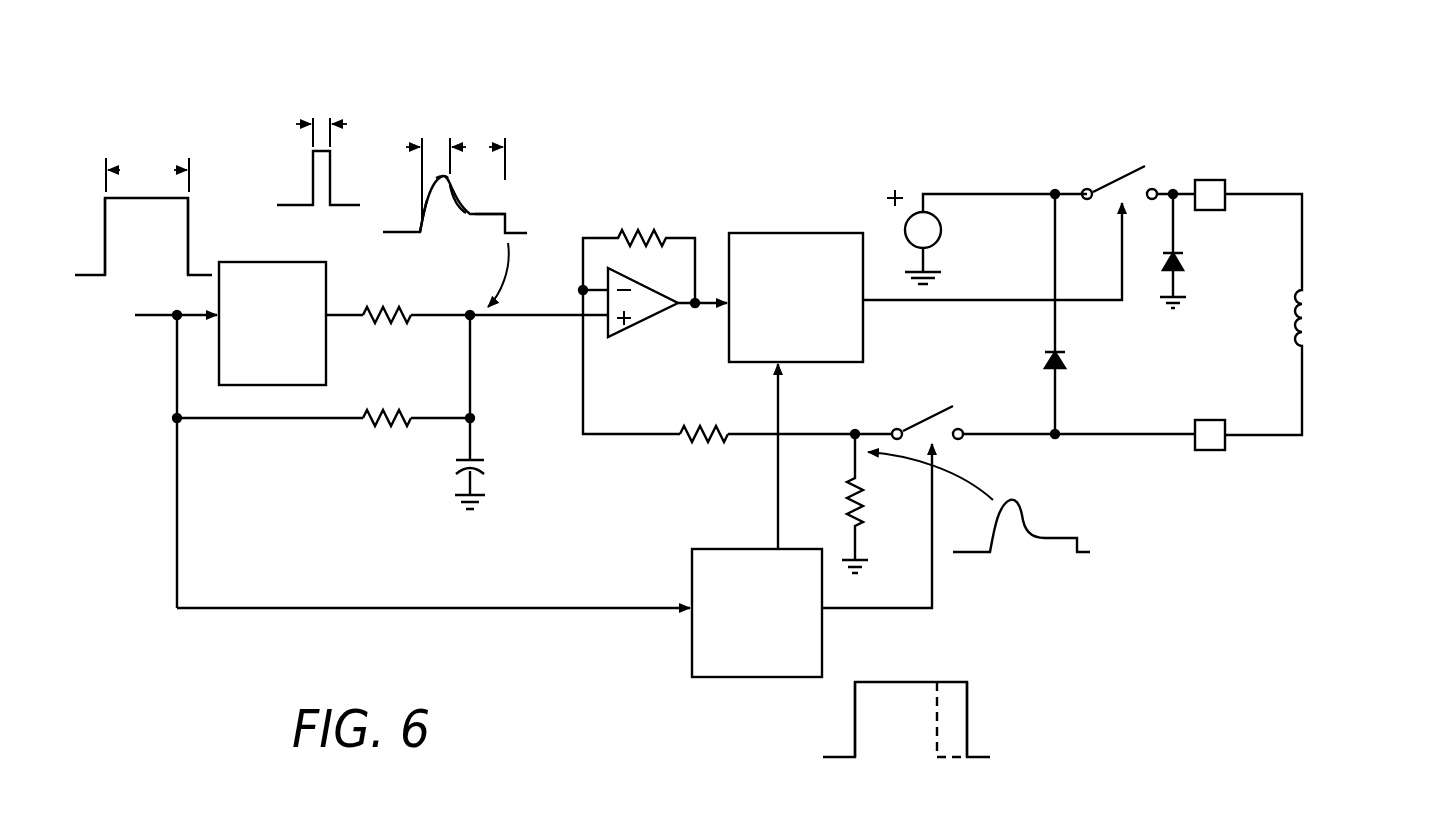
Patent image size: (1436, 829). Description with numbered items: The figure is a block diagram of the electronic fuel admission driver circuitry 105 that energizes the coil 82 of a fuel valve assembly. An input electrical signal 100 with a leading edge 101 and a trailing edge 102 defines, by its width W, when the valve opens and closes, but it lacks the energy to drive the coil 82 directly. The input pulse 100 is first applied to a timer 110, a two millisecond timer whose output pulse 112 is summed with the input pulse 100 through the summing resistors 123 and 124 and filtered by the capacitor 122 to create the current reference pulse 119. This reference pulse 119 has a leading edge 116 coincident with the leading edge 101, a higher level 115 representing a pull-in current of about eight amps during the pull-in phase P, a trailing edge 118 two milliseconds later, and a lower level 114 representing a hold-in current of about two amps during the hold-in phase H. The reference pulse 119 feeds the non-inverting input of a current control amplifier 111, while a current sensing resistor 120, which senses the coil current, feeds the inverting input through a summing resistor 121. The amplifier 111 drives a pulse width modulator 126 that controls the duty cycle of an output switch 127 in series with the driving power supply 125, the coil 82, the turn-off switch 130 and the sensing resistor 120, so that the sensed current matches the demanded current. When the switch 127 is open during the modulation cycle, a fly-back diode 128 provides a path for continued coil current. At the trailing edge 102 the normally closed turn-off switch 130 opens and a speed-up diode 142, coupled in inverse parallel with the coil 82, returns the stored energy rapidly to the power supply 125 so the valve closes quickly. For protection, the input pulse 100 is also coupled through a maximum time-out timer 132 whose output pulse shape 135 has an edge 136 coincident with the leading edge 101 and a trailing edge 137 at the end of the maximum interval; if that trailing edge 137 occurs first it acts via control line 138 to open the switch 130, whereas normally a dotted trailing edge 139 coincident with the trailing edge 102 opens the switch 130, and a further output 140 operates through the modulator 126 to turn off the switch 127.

The coil 82 is at (1311, 315).
The input electrical signal 100 is at (143, 230).
The leading edge 101 is at (102, 234).
The trailing edge 102 is at (194, 229).
The driver circuitry 105 is at (810, 125).
The timer 110 is at (272, 338).
The current control amplifier 111 is at (695, 256).
The 2 millisecond pulse 112 is at (355, 306).
The lower level 114 is at (503, 209).
The higher level 115 is at (441, 177).
The leading edge 116 is at (416, 221).
The trailing edge 118 is at (451, 186).
The current reference pulse 119 is at (455, 201).
The current sensing resistor 120 is at (867, 515).
The summing resistor 121 is at (704, 450).
The capacitor 122 is at (492, 412).
The summing resistor 123 is at (387, 330).
The summing resistor 124 is at (387, 434).
The driving power supply 125 is at (987, 245).
The pulse width modulator 126 is at (796, 313).
The output switch 127 is at (1125, 156).
The fly-back diode 128 is at (1225, 251).
The turn-off switch 130 is at (1025, 395).
The maximum time-out timer 132 is at (757, 628).
The output pulse shape 135 is at (906, 740).
The edge 136 is at (852, 714).
The trailing edge 137 is at (971, 718).
The control line 138 is at (1003, 509).
The dotted trailing edge 139 is at (935, 720).
The further output 140 is at (857, 526).
The speed-up diode 142 is at (1115, 316).